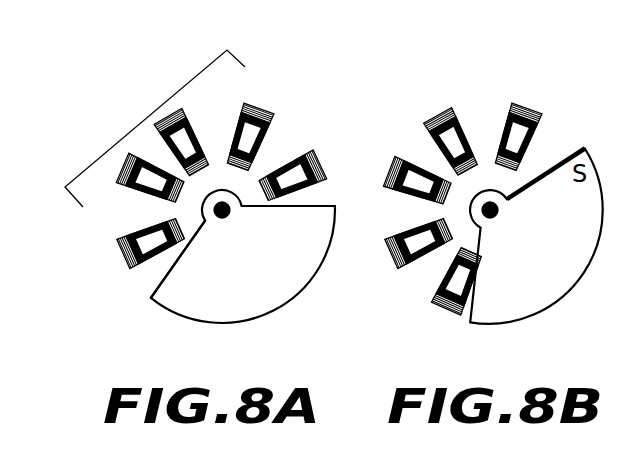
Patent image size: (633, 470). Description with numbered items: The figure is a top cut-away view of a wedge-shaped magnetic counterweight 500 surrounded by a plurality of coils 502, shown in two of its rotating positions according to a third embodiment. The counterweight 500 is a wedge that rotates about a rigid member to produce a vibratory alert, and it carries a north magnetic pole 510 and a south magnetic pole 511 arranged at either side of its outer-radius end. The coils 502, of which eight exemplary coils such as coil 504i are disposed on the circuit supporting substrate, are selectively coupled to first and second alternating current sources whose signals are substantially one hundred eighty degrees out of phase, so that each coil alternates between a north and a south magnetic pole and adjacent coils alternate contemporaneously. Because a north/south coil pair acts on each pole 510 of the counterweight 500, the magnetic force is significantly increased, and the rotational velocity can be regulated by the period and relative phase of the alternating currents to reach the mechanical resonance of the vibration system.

The wedge-shaped magnetic counterweight 500 is at (257, 295).
The plurality of coils 502 is at (142, 120).
The coil 504i is at (313, 143).
The north magnetic pole 510 is at (156, 300).
The south magnetic pole 511 is at (333, 220).